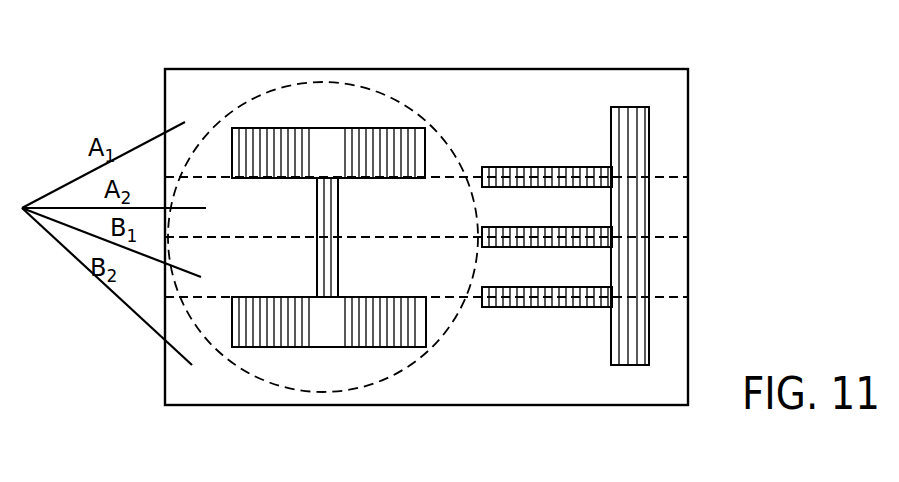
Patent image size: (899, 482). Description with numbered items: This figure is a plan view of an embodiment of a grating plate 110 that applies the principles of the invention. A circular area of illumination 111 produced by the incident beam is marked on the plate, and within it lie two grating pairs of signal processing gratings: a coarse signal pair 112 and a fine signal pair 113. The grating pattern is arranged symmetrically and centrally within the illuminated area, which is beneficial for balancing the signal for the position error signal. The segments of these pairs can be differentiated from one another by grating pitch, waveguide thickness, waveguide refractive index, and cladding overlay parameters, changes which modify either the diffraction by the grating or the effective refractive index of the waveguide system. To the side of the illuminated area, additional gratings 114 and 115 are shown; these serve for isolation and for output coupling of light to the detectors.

The grating plate 110 is at (570, 68).
The area of illumination 111 is at (247, 107).
The coarse signal pair 112 is at (338, 213).
The fine signal pair 113 is at (288, 347).
The additional gratings 114 is at (530, 167).
The additional gratings 115 is at (649, 212).